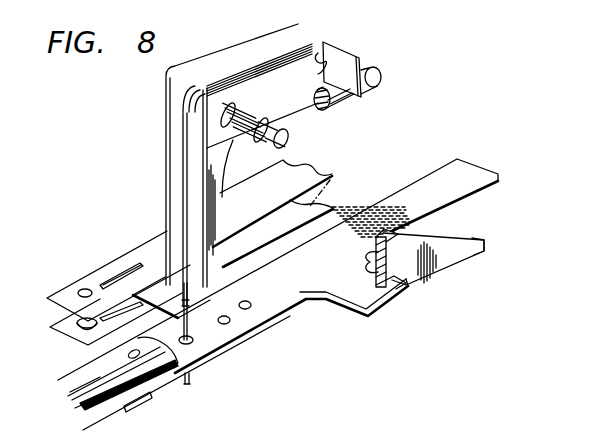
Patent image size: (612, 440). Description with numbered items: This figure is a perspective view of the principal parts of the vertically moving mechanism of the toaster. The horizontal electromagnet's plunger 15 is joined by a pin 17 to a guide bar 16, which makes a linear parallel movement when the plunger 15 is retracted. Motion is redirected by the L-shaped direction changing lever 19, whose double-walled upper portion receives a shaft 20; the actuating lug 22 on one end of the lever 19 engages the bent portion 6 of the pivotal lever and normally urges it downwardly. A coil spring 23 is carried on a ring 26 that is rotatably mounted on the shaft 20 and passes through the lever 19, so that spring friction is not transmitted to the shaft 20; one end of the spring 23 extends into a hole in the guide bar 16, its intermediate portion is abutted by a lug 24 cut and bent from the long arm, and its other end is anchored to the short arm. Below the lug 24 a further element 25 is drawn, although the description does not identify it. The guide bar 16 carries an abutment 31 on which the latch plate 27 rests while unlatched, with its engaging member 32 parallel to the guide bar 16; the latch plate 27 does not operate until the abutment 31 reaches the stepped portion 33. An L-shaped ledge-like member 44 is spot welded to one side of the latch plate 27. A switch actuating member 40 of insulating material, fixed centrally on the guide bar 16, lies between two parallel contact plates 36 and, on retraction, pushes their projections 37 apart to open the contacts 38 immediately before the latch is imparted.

The portion of the pivotal lever 6 is at (381, 72).
The plunger 15 is at (117, 422).
The guide bar 16 is at (449, 173).
The pin 17 is at (132, 357).
The L-shaped direction changing lever 19 is at (262, 37).
The shaft 20 is at (287, 138).
The actuating lug 22 is at (344, 64).
The coil spring 23 is at (185, 157).
The lug 24 is at (193, 305).
The pin end 25 is at (193, 348).
The ring 26 is at (257, 104).
The latch plate 27 is at (446, 263).
The abutment 31 is at (352, 300).
The engaging member 32 is at (473, 260).
The stepped portion 33 is at (403, 298).
The contact plates 36 is at (333, 175).
The projections 37 is at (122, 262).
The contacts 38 is at (77, 328).
The switch actuating member 40 is at (160, 288).
The L-shaped ledge-like member 44 is at (364, 268).